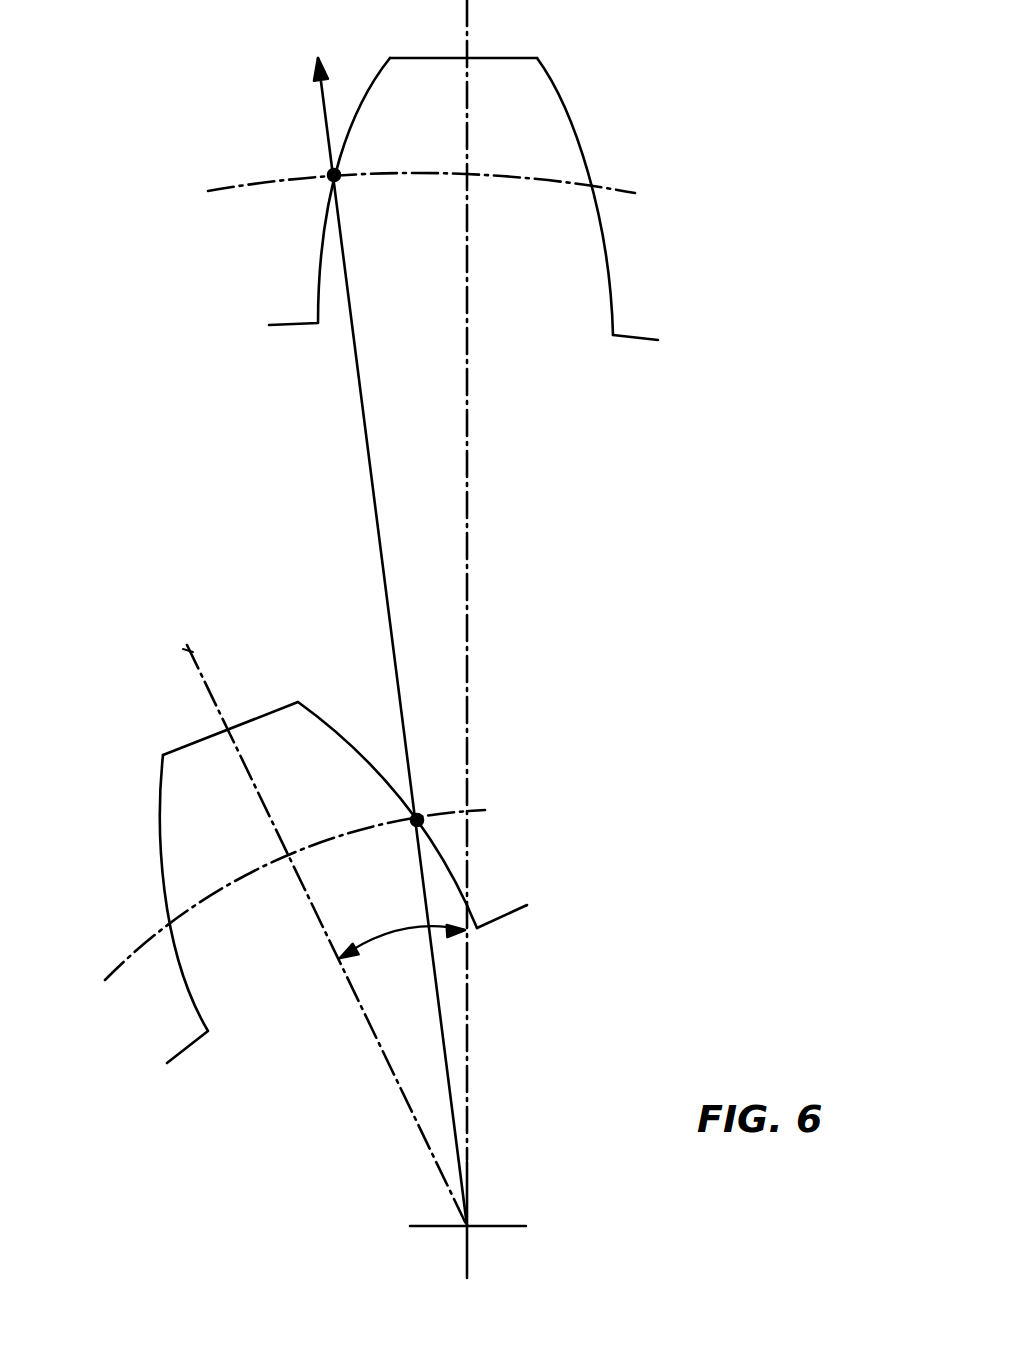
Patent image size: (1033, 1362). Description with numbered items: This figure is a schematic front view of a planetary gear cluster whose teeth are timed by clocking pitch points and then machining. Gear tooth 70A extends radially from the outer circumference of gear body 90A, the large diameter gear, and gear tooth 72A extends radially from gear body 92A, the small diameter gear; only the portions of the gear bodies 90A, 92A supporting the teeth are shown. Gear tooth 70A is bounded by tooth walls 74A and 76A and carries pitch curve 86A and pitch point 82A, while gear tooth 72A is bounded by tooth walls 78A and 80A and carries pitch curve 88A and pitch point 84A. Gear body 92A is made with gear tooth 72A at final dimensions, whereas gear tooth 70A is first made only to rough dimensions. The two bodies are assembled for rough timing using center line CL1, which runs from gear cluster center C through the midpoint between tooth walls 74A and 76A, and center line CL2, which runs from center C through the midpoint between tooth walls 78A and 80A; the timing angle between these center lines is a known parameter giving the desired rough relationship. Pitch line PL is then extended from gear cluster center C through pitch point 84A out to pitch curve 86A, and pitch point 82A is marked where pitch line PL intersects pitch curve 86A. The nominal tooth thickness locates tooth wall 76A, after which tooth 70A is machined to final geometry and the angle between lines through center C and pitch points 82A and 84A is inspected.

The gear tooth 70A is at (458, 170).
The gear tooth 72A is at (329, 806).
The tooth wall 74A is at (318, 259).
The tooth wall 76A is at (573, 134).
The tooth wall 78A is at (190, 997).
The tooth wall 80A is at (353, 741).
The pitch point 82A is at (334, 175).
The pitch point 84A is at (420, 818).
The pitch curve 86A is at (218, 190).
The pitch curve 88A is at (138, 947).
The gear body 90A is at (632, 336).
The gear body 92A is at (507, 913).
The pitch line PL is at (363, 413).
The center line CL1 is at (468, 397).
The center line CL2 is at (186, 653).
The gear cluster center C is at (466, 1227).